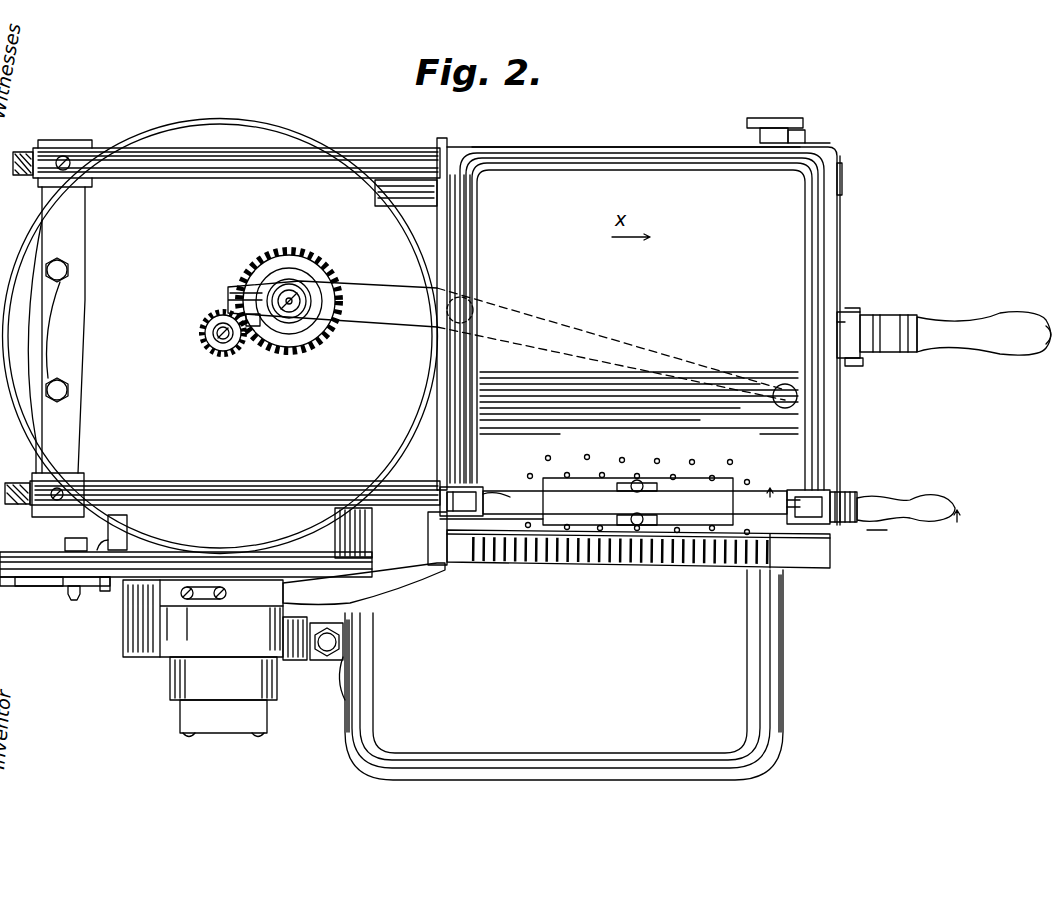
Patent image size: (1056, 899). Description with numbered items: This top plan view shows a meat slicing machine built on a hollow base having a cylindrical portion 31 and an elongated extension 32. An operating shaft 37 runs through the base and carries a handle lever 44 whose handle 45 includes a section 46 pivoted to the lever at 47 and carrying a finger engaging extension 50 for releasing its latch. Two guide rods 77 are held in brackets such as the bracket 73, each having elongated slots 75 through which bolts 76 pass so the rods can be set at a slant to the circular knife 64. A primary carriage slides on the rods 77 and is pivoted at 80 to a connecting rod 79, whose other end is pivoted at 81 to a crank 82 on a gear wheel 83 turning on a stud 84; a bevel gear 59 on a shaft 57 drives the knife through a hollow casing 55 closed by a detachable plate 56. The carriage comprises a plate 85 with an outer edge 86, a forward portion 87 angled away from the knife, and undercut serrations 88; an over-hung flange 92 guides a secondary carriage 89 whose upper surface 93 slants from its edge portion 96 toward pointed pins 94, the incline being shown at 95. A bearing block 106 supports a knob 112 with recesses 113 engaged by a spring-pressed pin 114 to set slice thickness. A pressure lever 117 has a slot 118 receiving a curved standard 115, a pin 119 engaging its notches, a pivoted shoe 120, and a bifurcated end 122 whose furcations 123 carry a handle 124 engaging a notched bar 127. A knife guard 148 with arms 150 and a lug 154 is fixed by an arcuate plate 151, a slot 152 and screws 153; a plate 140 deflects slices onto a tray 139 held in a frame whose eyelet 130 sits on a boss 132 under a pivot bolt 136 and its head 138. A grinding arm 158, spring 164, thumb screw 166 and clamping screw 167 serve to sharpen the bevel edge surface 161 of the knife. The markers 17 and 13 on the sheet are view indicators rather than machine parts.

The cylindrical portion 31 is at (214, 130).
The elongated extension 32 is at (412, 200).
The finger engaging extension 50 is at (140, 293).
The guide rods 77 is at (222, 180).
The supporting bracket 73 is at (60, 328).
The elongated slots 75 is at (52, 330).
The bolts 76 is at (62, 388).
The gear 17 is at (258, 262).
The gear wheel 83 is at (252, 262).
The stud 84 is at (298, 292).
The crank 82 is at (332, 304).
The bevel gear 59 is at (210, 340).
The over-hung flange 92 is at (460, 358).
The secondary carriage 89 is at (540, 146).
The edge portion 96 is at (606, 162).
The upper surface 93 is at (648, 186).
The incline 95 is at (632, 276).
The bearing block 106 is at (840, 143).
The knob 112 is at (750, 118).
The recesses or notches 113 is at (780, 105).
The spring-pressed pin 114 is at (805, 133).
The pivotal connection 81 is at (470, 312).
The connecting rod 79 is at (628, 340).
The pivotal connection 80 is at (780, 386).
The pointed pins 94 is at (655, 458).
The pressure lever 117 is at (540, 492).
The slot 118 is at (452, 487).
The curved post or standard 115 is at (460, 492).
The pin 119 is at (478, 489).
The pivoted shoe 120 is at (695, 478).
The plate 85 is at (468, 567).
The outer edge 86 is at (566, 567).
The serrations or teeth 88 is at (660, 568).
The forward portion 87 is at (428, 552).
The bifurcated end 122 is at (805, 490).
The bar 127 is at (808, 500).
The furcations 123 is at (848, 524).
The handle 124 is at (910, 522).
The section line 13 is at (867, 496).
The operating shaft 37 is at (862, 318).
The section 46 is at (888, 325).
The handle 45 is at (940, 354).
The pivotal connection 47 is at (857, 366).
The handle lever 44 is at (852, 352).
The arcuate knife guard 148 is at (178, 552).
The arms 150 is at (290, 575).
The lug 154 is at (115, 530).
The spring 164 is at (65, 542).
The hollow casing 55 is at (123, 640).
The securing screws 153 is at (222, 586).
The arcuate plate 151 is at (200, 606).
The slot 152 is at (232, 606).
The detachable plate 56 is at (160, 668).
The shaft 57 is at (55, 594).
The arm 158 is at (43, 588).
The thumb screw 166 is at (74, 602).
The clamping screw 167 is at (106, 592).
The plate 140 is at (364, 584).
The bevel edge surface 161 is at (418, 572).
The circular knife 64 is at (425, 575).
The pivot bolt 136 is at (340, 640).
The head 138 is at (343, 646).
The boss 132 is at (345, 655).
The eyelet 130 is at (325, 658).
The tray 139 is at (564, 675).